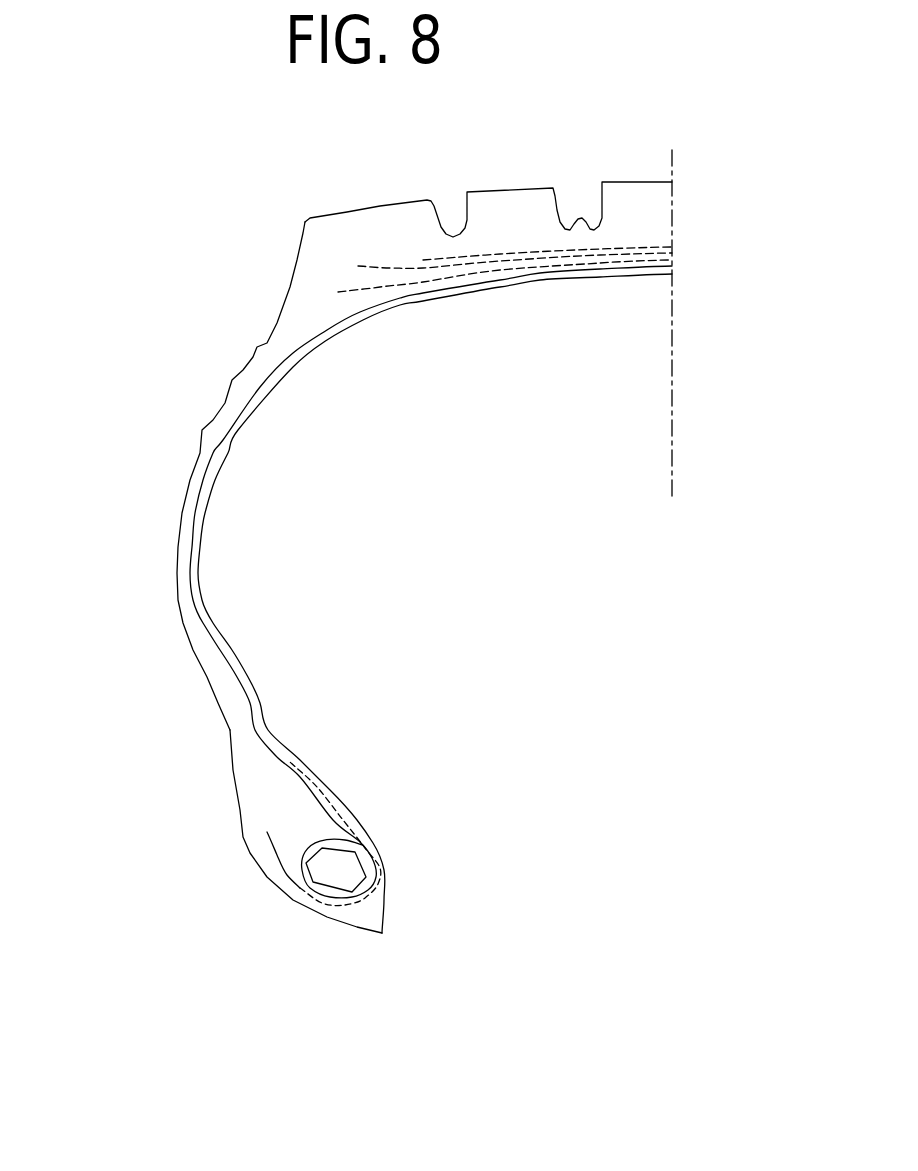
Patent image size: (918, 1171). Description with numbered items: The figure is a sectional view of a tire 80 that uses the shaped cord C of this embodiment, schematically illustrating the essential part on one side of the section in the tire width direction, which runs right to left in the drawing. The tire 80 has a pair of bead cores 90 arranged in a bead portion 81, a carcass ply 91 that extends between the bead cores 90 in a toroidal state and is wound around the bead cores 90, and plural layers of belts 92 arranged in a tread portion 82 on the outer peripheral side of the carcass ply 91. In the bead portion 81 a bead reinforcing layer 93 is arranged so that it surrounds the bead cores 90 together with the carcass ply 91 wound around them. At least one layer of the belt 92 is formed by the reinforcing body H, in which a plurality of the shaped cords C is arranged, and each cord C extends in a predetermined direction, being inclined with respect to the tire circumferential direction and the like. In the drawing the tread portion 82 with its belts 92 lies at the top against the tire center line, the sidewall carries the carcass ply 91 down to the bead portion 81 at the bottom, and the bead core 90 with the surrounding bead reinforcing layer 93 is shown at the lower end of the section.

The tire 80 is at (203, 355).
The bead portion 81 is at (240, 838).
The tread portion 82 is at (678, 222).
The bead core 90 is at (355, 868).
The carcass ply 91 is at (297, 350).
The belt 92 is at (638, 252).
The bead reinforcing layer 93 is at (370, 897).
The reinforcing body H is at (498, 252).
The cord C is at (547, 248).